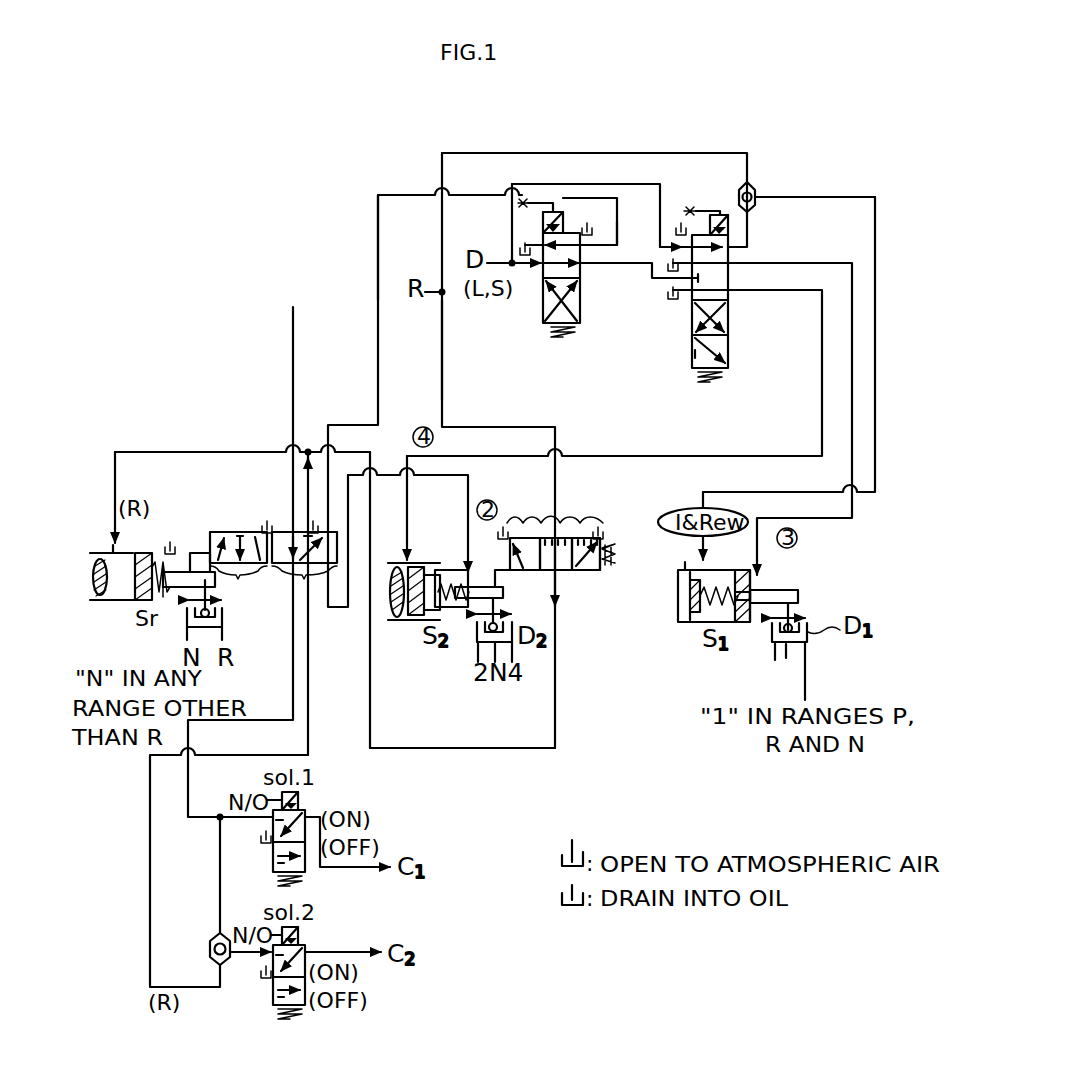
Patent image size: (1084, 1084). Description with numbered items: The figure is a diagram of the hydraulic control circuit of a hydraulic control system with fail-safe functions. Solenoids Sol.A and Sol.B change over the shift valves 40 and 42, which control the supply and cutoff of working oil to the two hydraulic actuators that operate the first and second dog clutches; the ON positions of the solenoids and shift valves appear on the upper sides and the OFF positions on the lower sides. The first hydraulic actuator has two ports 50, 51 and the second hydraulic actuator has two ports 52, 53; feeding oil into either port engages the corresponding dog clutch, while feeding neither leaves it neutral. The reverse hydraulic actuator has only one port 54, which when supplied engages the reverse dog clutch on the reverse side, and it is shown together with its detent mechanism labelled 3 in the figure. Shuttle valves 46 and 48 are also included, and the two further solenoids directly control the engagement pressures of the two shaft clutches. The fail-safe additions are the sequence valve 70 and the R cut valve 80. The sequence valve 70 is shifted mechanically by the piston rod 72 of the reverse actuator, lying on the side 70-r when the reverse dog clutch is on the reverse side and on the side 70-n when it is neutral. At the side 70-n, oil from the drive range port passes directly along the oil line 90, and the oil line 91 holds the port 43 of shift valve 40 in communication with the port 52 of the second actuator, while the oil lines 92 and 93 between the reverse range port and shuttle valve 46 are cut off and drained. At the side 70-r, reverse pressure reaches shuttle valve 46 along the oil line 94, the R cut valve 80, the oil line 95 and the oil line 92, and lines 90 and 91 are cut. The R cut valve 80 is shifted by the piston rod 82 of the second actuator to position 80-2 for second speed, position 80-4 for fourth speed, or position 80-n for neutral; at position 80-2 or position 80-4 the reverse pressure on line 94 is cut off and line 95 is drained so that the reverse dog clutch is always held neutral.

The shift position detent (D1) 3 is at (775, 667).
The shift valve 40 is at (543, 318).
The shift valve 42 is at (730, 365).
The port of the shift valve 40 43 is at (580, 247).
The shuttle valve 46 is at (210, 946).
The shuttle valve 48 is at (749, 184).
The port of the hydraulic actuator S1 50 is at (758, 582).
The port of the hydraulic actuator S1 51 is at (690, 560).
The port of the hydraulic actuator S2 52 is at (468, 574).
The port of the hydraulic actuator S2 53 is at (408, 558).
The port of the hydraulic actuator Sr 54 is at (120, 546).
The 2-R sequence valve 70 is at (279, 609).
The 70-r side of the 2-R sequence valve 70-r is at (241, 562).
The 70-n side of the 2-R sequence valve 70-n is at (307, 572).
The piston rod 72 is at (193, 592).
The R cut valve 80 is at (514, 549).
The position 80-4 of the R cut valve 80-4 is at (519, 520).
The position 80-n of the R cut valve 80-n is at (558, 519).
The position 80-2 of the R cut valve 80-2 is at (587, 519).
The piston rod 82 is at (485, 588).
The oil line 90 is at (293, 410).
The oil line 91 is at (378, 394).
The oil line 92 is at (308, 492).
The oil line 93 is at (308, 748).
The oil line 94 is at (442, 394).
The oil line 95 is at (470, 748).